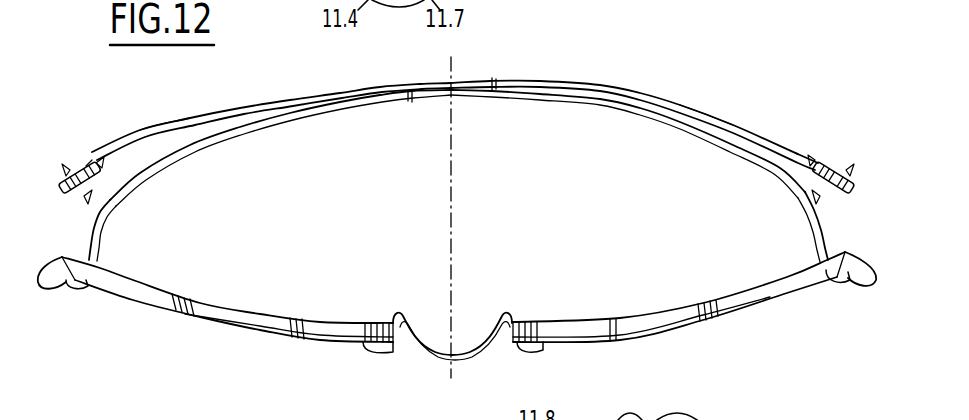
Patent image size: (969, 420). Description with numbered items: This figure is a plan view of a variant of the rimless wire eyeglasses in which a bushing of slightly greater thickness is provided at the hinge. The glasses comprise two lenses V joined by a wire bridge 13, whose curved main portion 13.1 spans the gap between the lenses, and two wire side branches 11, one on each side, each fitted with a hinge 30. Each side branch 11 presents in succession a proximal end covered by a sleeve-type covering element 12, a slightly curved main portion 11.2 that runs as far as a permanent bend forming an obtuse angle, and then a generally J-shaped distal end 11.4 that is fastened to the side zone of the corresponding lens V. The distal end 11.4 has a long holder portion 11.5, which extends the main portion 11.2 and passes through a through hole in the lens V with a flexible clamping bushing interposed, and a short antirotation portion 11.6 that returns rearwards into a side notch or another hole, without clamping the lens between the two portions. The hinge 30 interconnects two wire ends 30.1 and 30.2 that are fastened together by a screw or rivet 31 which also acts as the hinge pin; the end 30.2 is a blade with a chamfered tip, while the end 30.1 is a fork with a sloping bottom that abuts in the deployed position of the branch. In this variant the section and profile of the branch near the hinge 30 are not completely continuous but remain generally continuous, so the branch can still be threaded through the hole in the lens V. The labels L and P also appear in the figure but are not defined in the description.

The side branch 11 is at (193, 112).
The main portion 11.2 is at (164, 124).
The distal end 11.4 is at (69, 296).
The long holder portion 11.5 is at (100, 245).
The short antirotation portion 11.6 is at (70, 257).
The covering element 12 is at (165, 160).
The bridge 13 is at (425, 354).
The curved main portion 13.1 is at (485, 347).
The hinge 30 is at (70, 148).
The wire end 30.1 is at (84, 200).
The wire end 30.2 is at (90, 166).
The screw or rivet 31 is at (70, 174).
The lens L is at (737, 97).
The median plane P is at (452, 64).
The lens V is at (203, 316).